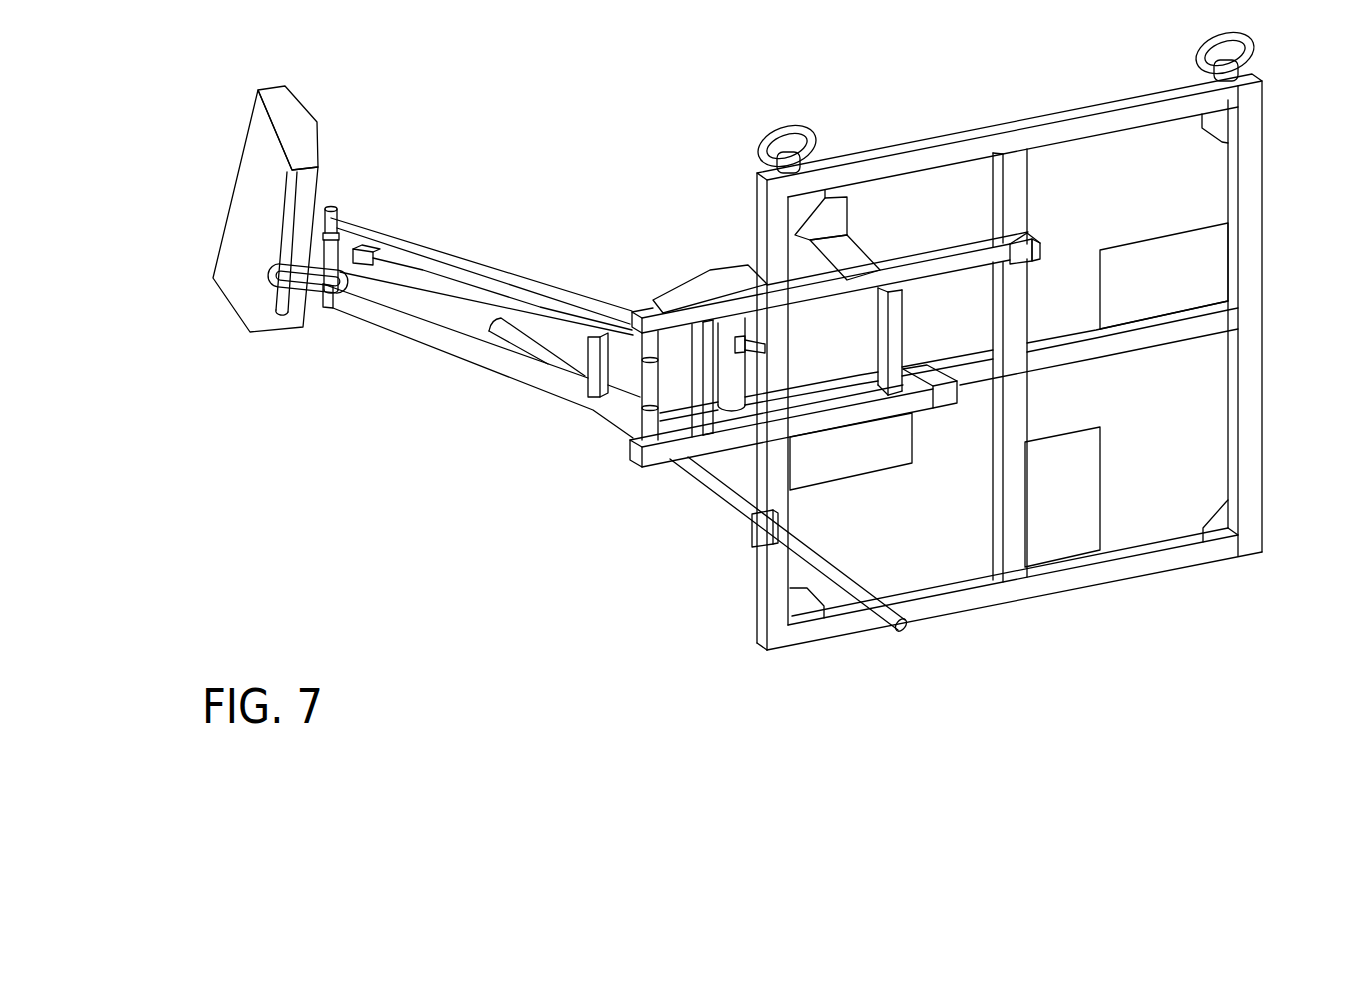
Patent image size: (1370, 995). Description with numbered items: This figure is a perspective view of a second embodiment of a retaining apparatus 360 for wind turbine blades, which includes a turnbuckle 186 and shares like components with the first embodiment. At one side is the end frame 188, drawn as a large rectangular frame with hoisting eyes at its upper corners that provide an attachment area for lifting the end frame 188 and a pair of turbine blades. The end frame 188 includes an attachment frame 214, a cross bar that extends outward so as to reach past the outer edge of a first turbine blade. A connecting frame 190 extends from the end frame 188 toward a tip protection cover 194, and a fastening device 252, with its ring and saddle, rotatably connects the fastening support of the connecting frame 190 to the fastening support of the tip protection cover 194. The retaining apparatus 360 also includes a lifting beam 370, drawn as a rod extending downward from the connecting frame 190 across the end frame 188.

The turnbuckle 186 is at (604, 300).
The end frame 188 is at (1264, 472).
The connecting frame 190 is at (445, 353).
The tip protection cover 194 is at (250, 184).
The attachment frame 214 is at (777, 287).
The fastening device 252 is at (318, 192).
The retaining apparatus 360 is at (558, 528).
The lifting beam 370 is at (708, 505).